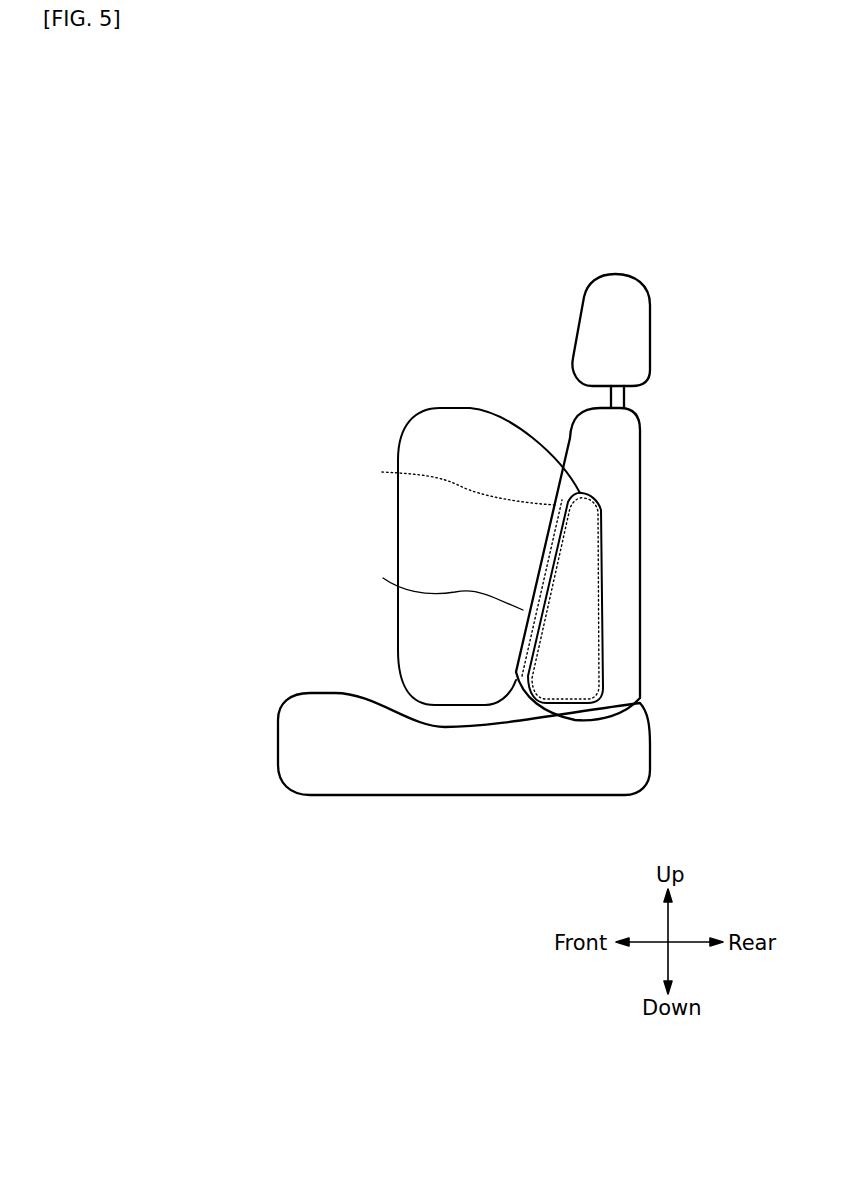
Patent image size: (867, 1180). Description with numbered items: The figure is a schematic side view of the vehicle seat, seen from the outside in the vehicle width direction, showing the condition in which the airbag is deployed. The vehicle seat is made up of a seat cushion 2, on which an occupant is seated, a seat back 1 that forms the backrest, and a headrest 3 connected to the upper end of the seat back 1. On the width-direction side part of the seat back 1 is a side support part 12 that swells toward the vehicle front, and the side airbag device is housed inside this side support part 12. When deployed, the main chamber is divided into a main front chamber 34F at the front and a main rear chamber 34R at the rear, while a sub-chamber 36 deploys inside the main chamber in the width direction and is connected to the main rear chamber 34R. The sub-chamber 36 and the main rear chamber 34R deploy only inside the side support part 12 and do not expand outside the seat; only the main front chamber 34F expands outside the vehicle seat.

The seat back 1 is at (642, 441).
The seat cushion 2 is at (452, 787).
The headrest 3 is at (650, 322).
The side support part 12 is at (439, 587).
The main front chamber 34F is at (481, 418).
The main rear chamber 34R is at (586, 583).
The sub-chamber 36 is at (456, 482).